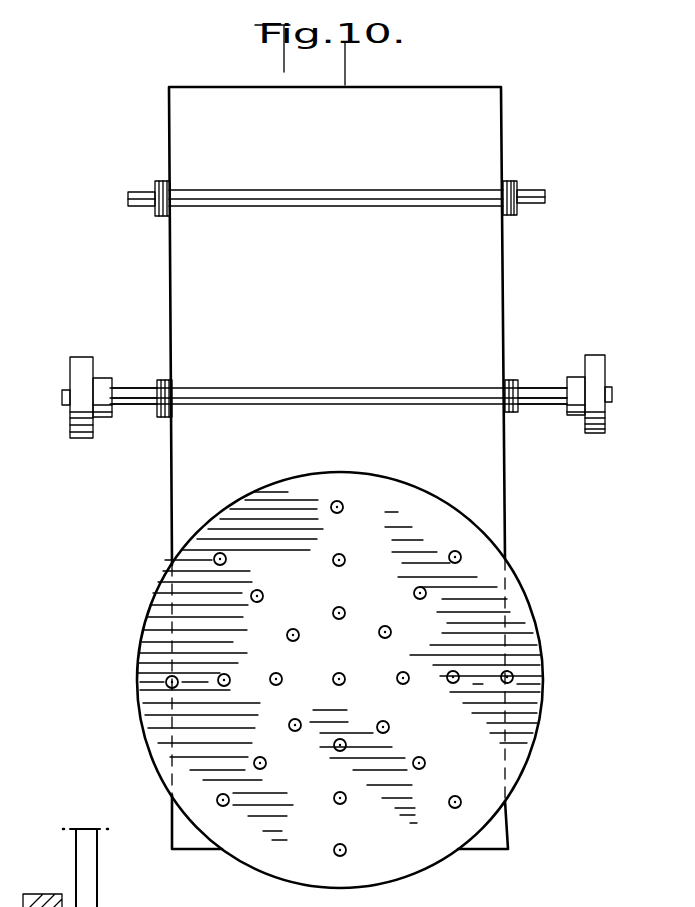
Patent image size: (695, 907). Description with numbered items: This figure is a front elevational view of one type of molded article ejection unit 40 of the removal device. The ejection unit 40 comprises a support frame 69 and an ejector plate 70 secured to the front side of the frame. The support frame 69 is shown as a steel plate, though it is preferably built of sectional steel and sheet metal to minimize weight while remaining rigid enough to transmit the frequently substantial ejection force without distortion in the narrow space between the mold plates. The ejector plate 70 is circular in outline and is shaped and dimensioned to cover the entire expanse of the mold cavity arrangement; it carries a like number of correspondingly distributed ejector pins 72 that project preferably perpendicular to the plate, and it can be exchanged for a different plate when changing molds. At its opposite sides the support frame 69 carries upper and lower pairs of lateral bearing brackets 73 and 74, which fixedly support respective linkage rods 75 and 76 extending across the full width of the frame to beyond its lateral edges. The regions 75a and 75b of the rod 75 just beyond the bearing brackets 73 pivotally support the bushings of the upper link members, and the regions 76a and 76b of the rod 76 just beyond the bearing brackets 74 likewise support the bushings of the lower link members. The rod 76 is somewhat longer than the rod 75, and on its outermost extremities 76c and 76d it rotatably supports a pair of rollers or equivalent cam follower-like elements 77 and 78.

The ejection unit 40 is at (552, 543).
The support frame 69 is at (224, 98).
The ejector plate 70 is at (522, 740).
The ejector pins 72 is at (344, 803).
The upper lateral bearing brackets 73 is at (161, 181).
The lower lateral bearing brackets 74 is at (163, 379).
The upper linkage rod 75 is at (335, 190).
The rod region 75a is at (537, 204).
The rod region 75b is at (140, 208).
The lower linkage rod 76 is at (335, 388).
The rod region 76a is at (544, 405).
The rod region 76b is at (140, 409).
The outermost extremity 76c is at (613, 388).
The outermost extremity 76d is at (63, 392).
The roller 77 is at (598, 434).
The roller 78 is at (80, 439).